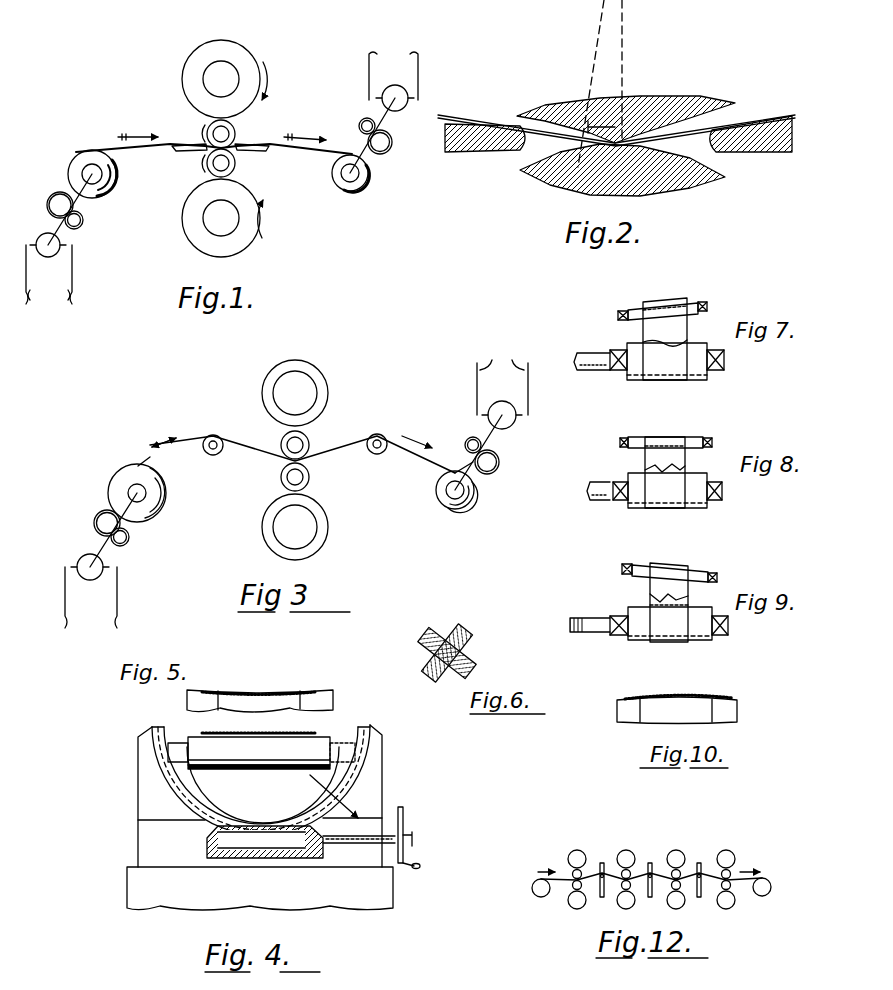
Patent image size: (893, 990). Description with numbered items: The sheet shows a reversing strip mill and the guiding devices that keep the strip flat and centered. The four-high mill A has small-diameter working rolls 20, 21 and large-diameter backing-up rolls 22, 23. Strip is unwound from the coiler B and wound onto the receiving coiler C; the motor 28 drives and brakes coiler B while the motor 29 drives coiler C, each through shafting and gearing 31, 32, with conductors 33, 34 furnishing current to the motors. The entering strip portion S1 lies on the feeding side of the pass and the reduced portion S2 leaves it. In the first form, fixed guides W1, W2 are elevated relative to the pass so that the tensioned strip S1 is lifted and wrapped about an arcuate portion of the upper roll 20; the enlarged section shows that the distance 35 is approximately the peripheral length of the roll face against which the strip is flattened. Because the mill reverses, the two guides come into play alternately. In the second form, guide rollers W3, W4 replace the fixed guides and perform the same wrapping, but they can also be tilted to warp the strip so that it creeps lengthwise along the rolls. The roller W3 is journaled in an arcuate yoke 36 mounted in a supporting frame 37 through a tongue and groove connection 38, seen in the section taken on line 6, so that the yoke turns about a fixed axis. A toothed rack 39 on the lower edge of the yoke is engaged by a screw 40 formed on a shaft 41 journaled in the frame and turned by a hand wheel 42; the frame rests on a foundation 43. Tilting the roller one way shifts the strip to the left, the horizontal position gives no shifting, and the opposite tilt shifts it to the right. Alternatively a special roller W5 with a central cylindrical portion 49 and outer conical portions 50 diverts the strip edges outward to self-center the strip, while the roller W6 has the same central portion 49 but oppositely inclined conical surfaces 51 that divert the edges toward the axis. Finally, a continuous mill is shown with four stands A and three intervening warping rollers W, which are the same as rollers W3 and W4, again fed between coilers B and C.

In FIG. 1, the upper working roll 20 is at (237, 128).
In FIG. 2, the upper working roll 20 is at (556, 105).
In FIG. 3, the upper working roll 20 is at (310, 442).
In FIG. 7, the upper working roll 20 is at (634, 372).
In FIG. 8, the upper working roll 20 is at (636, 503).
In FIG. 9, the upper working roll 20 is at (638, 640).
In FIG. 1, the lower working roll 21 is at (236, 168).
In FIG. 2, the lower working roll 21 is at (552, 178).
In FIG. 3, the lower working roll 21 is at (310, 483).
In FIG. 1, the upper backing-up roll 22 is at (258, 64).
In FIG. 3, the upper backing-up roll 22 is at (328, 395).
In FIG. 1, the lower backing-up roll 23 is at (262, 246).
In FIG. 3, the lower backing-up roll 23 is at (328, 535).
In FIG. 1, the motor 28 is at (50, 258).
In FIG. 3, the motor 28 is at (95, 580).
In FIG. 1, the motor 29 is at (395, 85).
In FIG. 3, the motor 29 is at (514, 421).
In FIG. 1, the shafting and gearing 31 is at (76, 208).
In FIG. 3, the shafting and gearing 31 is at (96, 536).
In FIG. 1, the shafting and gearing 32 is at (376, 124).
In FIG. 3, the shafting and gearing 32 is at (482, 446).
In FIG. 1, the conductors 33 is at (49, 284).
In FIG. 3, the conductors 33 is at (110, 620).
In FIG. 1, the conductors 34 is at (393, 72).
In FIG. 3, the conductors 34 is at (502, 382).
In FIG. 2, the peripheral face distance 35 is at (601, 128).
In FIG. 6, the arcuate frame or yoke 36 is at (432, 640).
In FIG. 4, the arcuate frame or yoke 36 is at (200, 806).
In FIG. 6, the supporting frame 37 is at (472, 666).
In FIG. 4, the supporting frame 37 is at (372, 752).
In FIG. 6, the tongue and groove connection 38 is at (462, 640).
In FIG. 4, the toothed rack 39 is at (226, 830).
In FIG. 4, the screw 40 is at (266, 850).
In FIG. 4, the shaft 41 is at (208, 846).
In FIG. 4, the hand wheel 42 is at (404, 810).
In FIG. 4, the foundation 43 is at (388, 886).
In FIG. 10, the central cylindrical portion 49 is at (655, 708).
In FIG. 5, the central cylindrical portion 49 is at (280, 702).
In FIG. 5, the conical portions 50 is at (188, 698).
In FIG. 10, the conical surfaces 51 is at (733, 697).
In FIG. 4, the section line 6 is at (366, 792).
In FIG. 1, the four-high mill A is at (236, 45).
In FIG. 3, the four-high mill A is at (318, 372).
In FIG. 12, the four-high mill A is at (568, 850).
In FIG. 1, the unwinding coiler B is at (76, 158).
In FIG. 3, the unwinding coiler B is at (108, 486).
In FIG. 12, the unwinding coiler B is at (532, 889).
In FIG. 1, the receiving coiler C is at (368, 170).
In FIG. 3, the receiving coiler C is at (476, 494).
In FIG. 12, the receiving coiler C is at (770, 882).
In FIG. 12, the warping rollers W is at (651, 872).
In FIG. 1, the fixed guide W1 is at (180, 152).
In FIG. 2, the fixed guide W1 is at (470, 152).
In FIG. 1, the fixed guide W2 is at (258, 152).
In FIG. 2, the fixed guide W2 is at (758, 142).
In FIG. 3, the guide roller W3 is at (213, 456).
In FIG. 7, the guide roller W3 is at (685, 305).
In FIG. 8, the guide roller W3 is at (690, 437).
In FIG. 9, the guide roller W3 is at (695, 570).
In FIG. 4, the guide roller W3 is at (292, 760).
In FIG. 3, the guide roller W4 is at (380, 455).
In FIG. 5, the special roller W5 is at (334, 697).
In FIG. 10, the roller W6 is at (738, 708).
In FIG. 1, the entering strip portion S1 is at (126, 150).
In FIG. 2, the entering strip portion S1 is at (500, 126).
In FIG. 3, the entering strip portion S1 is at (240, 448).
In FIG. 7, the entering strip portion S1 is at (650, 326).
In FIG. 8, the entering strip portion S1 is at (650, 456).
In FIG. 9, the entering strip portion S1 is at (660, 586).
In FIG. 10, the entering strip portion S1 is at (688, 694).
In FIG. 5, the entering strip portion S1 is at (240, 692).
In FIG. 4, the entering strip portion S1 is at (246, 734).
In FIG. 12, the entering strip portion S1 is at (562, 880).
In FIG. 1, the reduced strip portion S2 is at (302, 150).
In FIG. 2, the reduced strip portion S2 is at (692, 136).
In FIG. 3, the reduced strip portion S2 is at (340, 450).
In FIG. 12, the reduced strip portion S2 is at (742, 880).